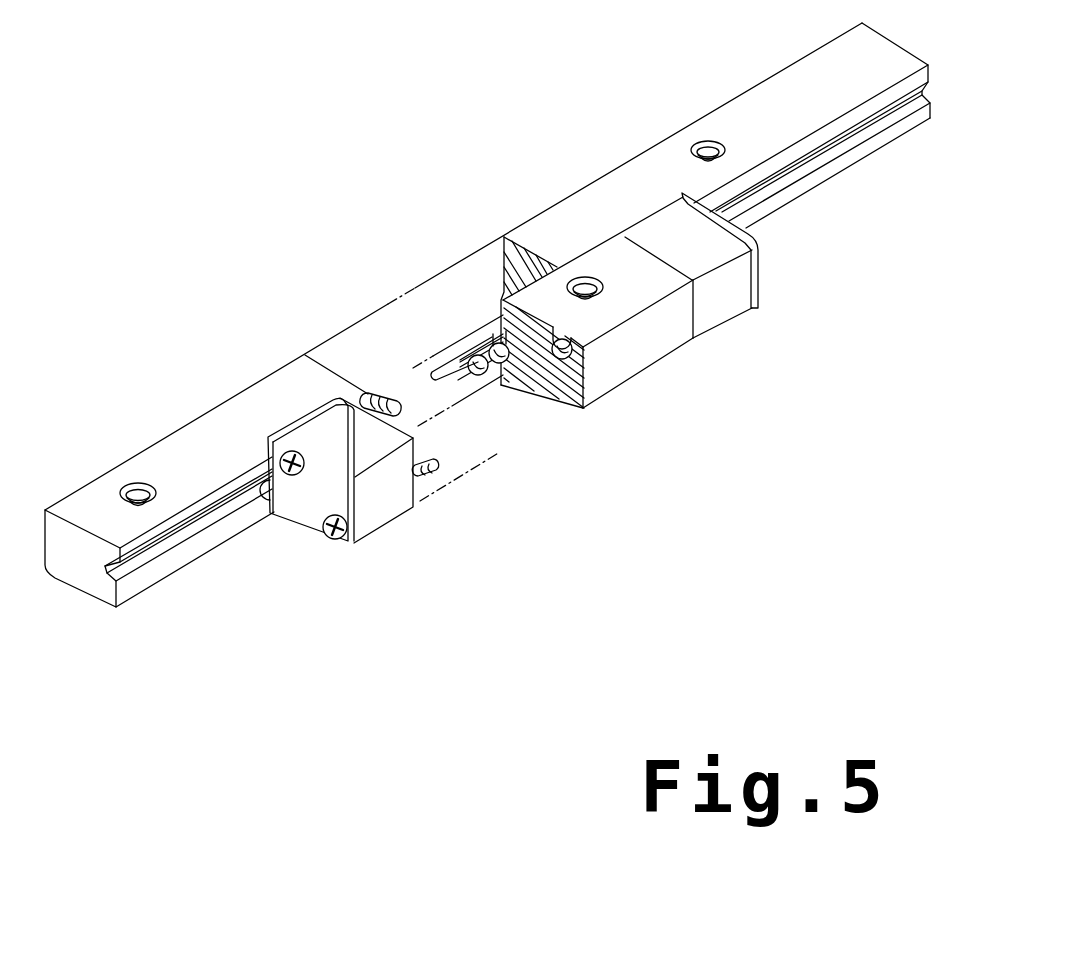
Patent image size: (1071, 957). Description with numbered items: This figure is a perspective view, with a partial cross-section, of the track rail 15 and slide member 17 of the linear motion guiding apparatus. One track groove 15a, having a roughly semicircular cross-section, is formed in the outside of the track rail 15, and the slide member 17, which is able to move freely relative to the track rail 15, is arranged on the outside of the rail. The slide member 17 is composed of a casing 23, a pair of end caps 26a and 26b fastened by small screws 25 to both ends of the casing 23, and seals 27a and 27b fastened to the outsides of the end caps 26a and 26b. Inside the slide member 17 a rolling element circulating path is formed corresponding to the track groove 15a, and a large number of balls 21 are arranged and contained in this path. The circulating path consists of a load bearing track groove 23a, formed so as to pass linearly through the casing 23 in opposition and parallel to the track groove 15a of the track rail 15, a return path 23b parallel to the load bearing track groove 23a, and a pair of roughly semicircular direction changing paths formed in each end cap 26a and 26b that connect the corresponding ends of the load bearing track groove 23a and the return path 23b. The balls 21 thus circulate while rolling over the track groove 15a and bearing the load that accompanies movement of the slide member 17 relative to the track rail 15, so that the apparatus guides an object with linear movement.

The track rail 15 is at (190, 410).
The track groove 15a is at (165, 540).
The slide member 17 is at (766, 262).
The balls 21 is at (562, 361).
The casing 23 is at (627, 365).
The load bearing track groove 23a is at (489, 337).
The return path 23b is at (570, 362).
The small screws 25 is at (292, 476).
The end cap 26a is at (395, 502).
The end cap 26b is at (718, 318).
The seal 27a is at (362, 518).
The seal 27b is at (758, 288).